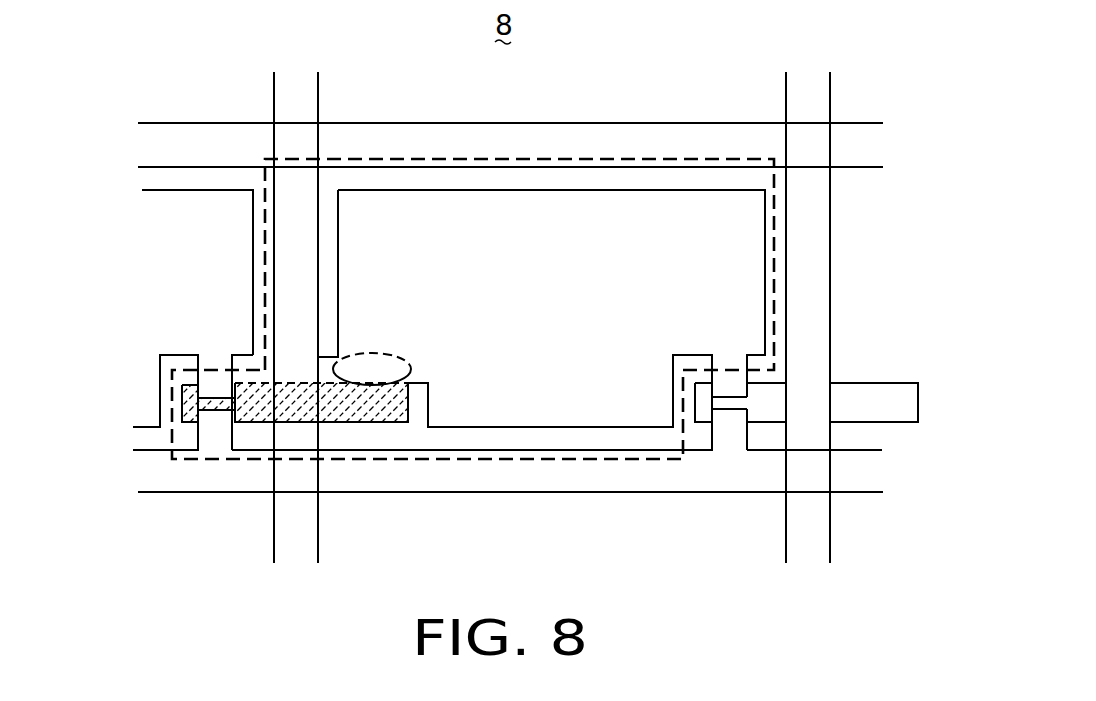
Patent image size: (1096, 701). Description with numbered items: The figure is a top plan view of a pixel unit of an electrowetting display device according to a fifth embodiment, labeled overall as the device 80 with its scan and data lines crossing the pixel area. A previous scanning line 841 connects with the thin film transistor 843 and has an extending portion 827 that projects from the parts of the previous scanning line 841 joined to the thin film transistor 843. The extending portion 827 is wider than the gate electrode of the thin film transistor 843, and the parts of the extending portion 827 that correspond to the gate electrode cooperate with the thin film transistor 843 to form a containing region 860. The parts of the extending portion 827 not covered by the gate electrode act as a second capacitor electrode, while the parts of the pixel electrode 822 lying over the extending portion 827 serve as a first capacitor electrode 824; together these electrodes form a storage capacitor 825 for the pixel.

The scan line 80 is at (629, 121).
The previous scanning line 841 is at (302, 95).
The pixel electrode 822 is at (718, 242).
The thin film transistor 843 is at (165, 433).
The containing region 860 is at (362, 408).
The first capacitor electrode 824 is at (388, 370).
The storage capacitor 825 is at (422, 377).
The extending portion 827 is at (373, 352).